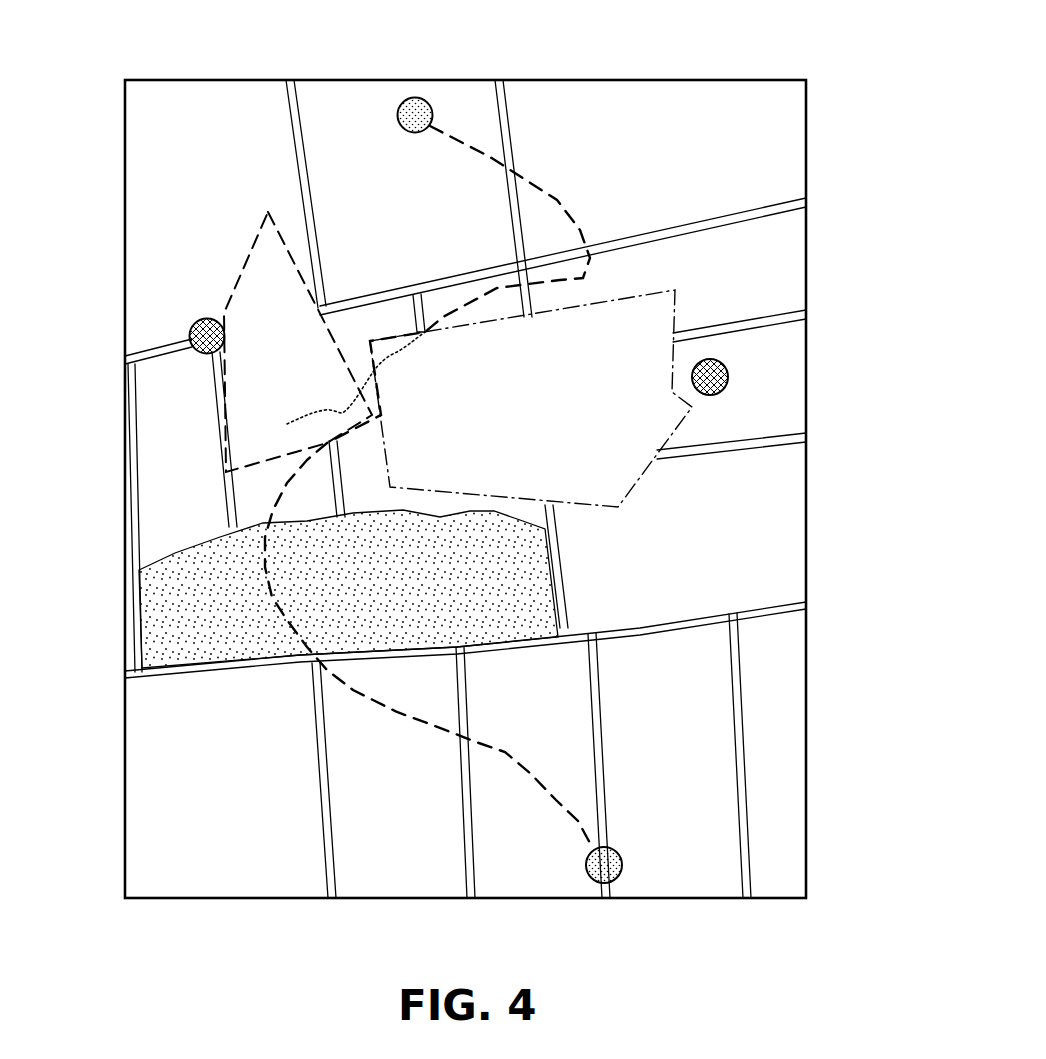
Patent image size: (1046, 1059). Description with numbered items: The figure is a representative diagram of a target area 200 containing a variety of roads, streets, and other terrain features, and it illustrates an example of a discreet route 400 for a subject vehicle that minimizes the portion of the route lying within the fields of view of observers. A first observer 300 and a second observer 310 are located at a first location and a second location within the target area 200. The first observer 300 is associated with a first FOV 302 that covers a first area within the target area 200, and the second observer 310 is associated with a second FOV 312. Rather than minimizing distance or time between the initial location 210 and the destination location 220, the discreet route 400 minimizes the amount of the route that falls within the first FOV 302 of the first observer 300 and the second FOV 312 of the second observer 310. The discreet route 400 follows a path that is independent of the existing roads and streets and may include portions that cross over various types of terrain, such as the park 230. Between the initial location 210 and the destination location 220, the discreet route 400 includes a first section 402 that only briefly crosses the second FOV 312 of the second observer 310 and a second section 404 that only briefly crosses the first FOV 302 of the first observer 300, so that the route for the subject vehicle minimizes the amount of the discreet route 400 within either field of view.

The target area 200 is at (630, 80).
The initial location 210 is at (623, 867).
The destination location 220 is at (415, 97).
The park 230 is at (163, 598).
The first observer 300 is at (728, 376).
The first FOV 302 is at (553, 416).
The second observer 310 is at (205, 318).
The second FOV 312 is at (303, 369).
The discreet route 400 is at (403, 716).
The first section 402 is at (331, 385).
The second section 404 is at (397, 355).